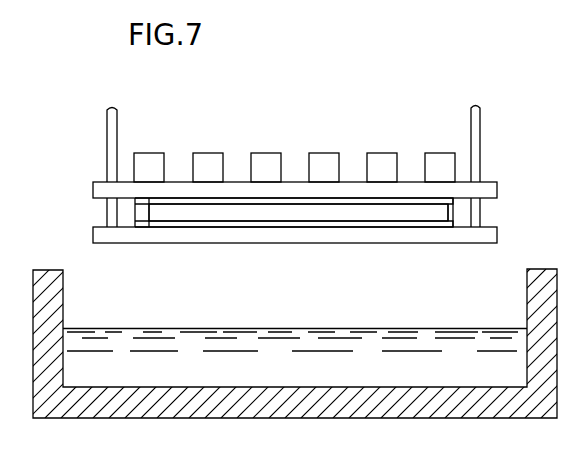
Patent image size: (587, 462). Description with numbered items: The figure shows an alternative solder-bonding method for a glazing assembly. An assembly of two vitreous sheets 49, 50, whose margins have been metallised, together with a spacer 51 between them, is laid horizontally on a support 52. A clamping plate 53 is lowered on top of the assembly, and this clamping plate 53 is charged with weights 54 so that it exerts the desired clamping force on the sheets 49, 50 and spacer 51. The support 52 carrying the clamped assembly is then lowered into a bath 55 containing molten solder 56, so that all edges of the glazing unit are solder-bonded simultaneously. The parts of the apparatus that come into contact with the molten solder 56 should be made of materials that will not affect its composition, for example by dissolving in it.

The vitreous sheet 49 is at (149, 227).
The vitreous sheet 50 is at (201, 223).
The spacer 51 is at (260, 212).
The support 52 is at (325, 236).
The clamping plate 53 is at (354, 188).
The weights 54 is at (320, 165).
The bath 55 is at (537, 287).
The molten solder 56 is at (398, 360).